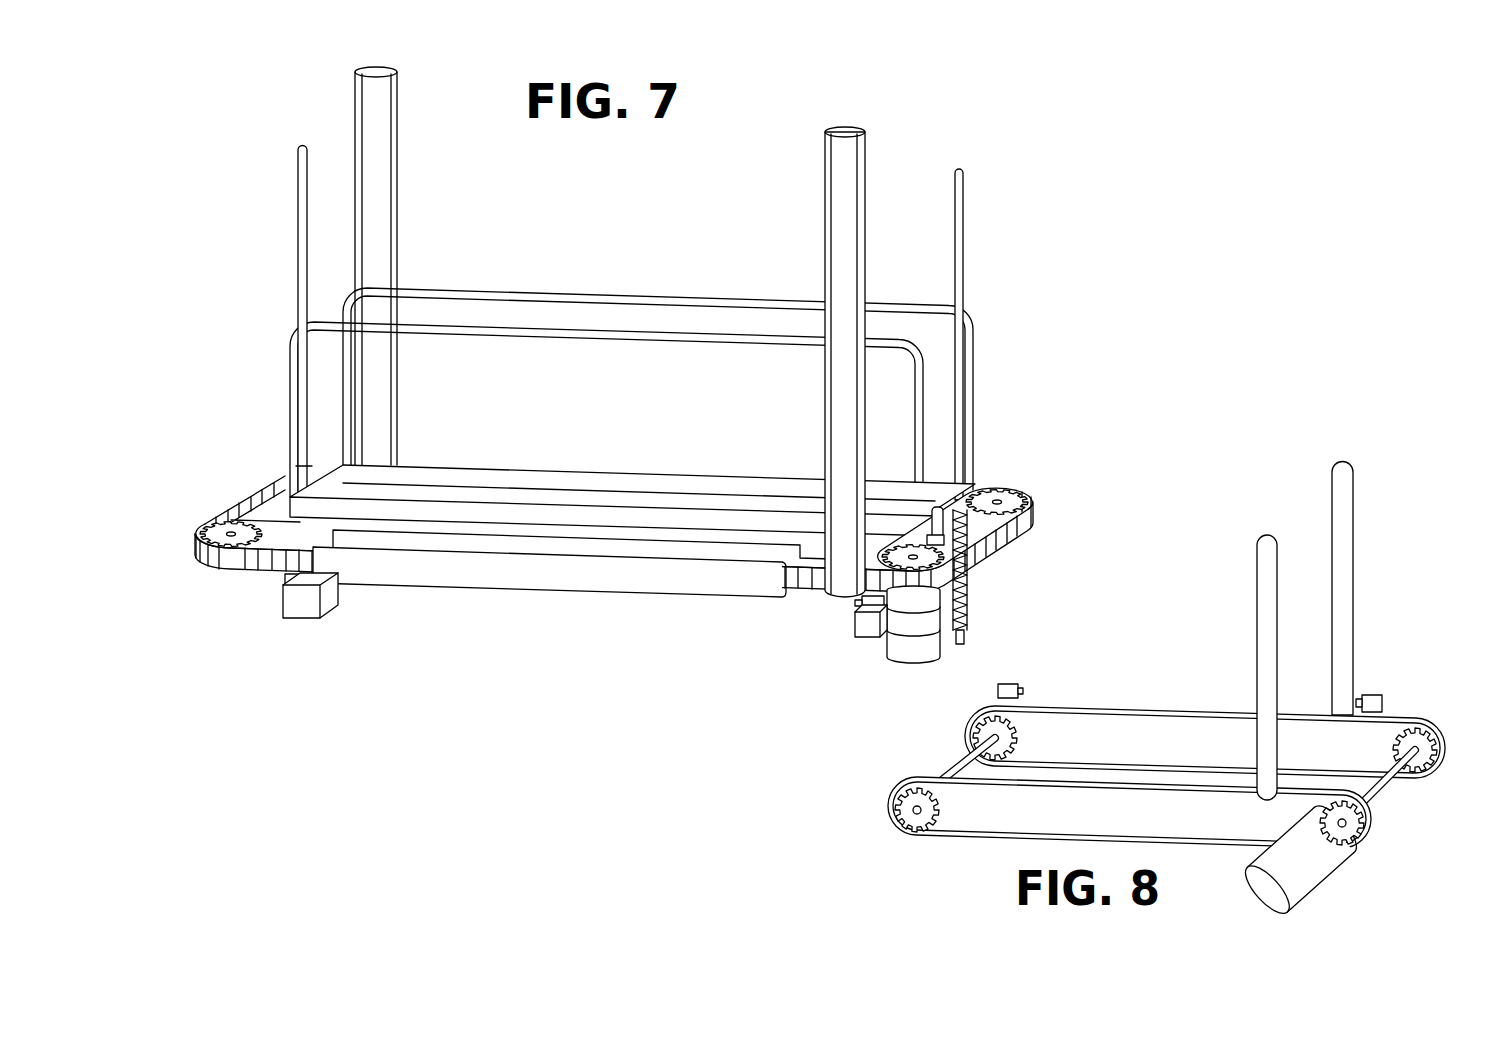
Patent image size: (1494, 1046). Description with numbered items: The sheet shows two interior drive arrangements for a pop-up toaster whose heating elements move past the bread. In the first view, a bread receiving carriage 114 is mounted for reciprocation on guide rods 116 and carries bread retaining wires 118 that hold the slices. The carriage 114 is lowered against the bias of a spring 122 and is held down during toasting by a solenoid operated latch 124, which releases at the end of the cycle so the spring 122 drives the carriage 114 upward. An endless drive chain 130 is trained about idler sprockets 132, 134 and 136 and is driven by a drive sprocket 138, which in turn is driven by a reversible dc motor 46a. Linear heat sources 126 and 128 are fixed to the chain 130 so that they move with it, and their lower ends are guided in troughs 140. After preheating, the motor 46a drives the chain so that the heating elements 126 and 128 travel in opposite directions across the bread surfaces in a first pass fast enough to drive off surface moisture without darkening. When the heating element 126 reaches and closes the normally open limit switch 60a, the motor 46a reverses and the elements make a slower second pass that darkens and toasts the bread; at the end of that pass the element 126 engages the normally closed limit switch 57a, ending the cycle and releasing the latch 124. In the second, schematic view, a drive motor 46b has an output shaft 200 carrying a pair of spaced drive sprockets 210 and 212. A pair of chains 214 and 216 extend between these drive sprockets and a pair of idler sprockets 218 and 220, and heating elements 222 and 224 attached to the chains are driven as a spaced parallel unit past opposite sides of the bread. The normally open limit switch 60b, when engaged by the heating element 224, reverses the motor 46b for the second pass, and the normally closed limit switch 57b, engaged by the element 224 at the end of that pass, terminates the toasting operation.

In FIG. 7, the bread receiving carriage 114 is at (490, 490).
In FIG. 7, the guide rods 116 is at (962, 246).
In FIG. 7, the bread retaining wires 118 is at (583, 330).
In FIG. 7, the spring 122 is at (970, 578).
In FIG. 7, the solenoid operated latch 124 is at (927, 528).
In FIG. 7, the linear heat source 126 is at (872, 155).
In FIG. 7, the linear heat source 128 is at (388, 165).
In FIG. 7, the endless drive chain 130 is at (1002, 537).
In FIG. 7, the idler sprocket 132 is at (1010, 499).
In FIG. 7, the idler sprocket 134 is at (313, 463).
In FIG. 7, the idler sprocket 136 is at (222, 520).
In FIG. 7, the drive sprocket 138 is at (967, 616).
In FIG. 7, the troughs 140 is at (548, 568).
In FIG. 7, the reversible dc motor 46a is at (905, 655).
In FIG. 7, the normally closed limit switch 57a is at (855, 610).
In FIG. 7, the normally open limit switch 60a is at (280, 578).
In FIG. 8, the output shaft 200 is at (1360, 835).
In FIG. 8, the drive sprocket 210 is at (1365, 830).
In FIG. 8, the drive sprocket 212 is at (1418, 777).
In FIG. 8, the chain 214 is at (1015, 843).
In FIG. 8, the chain 216 is at (1130, 710).
In FIG. 8, the idler sprocket 218 is at (900, 798).
In FIG. 8, the idler sprocket 220 is at (978, 738).
In FIG. 8, the heating element 222 is at (1257, 605).
In FIG. 8, the heating element 224 is at (1353, 550).
In FIG. 8, the drive motor 46b is at (1305, 868).
In FIG. 8, the normally closed limit switch 57b is at (1372, 693).
In FIG. 8, the normally open limit switch 60b is at (1005, 688).